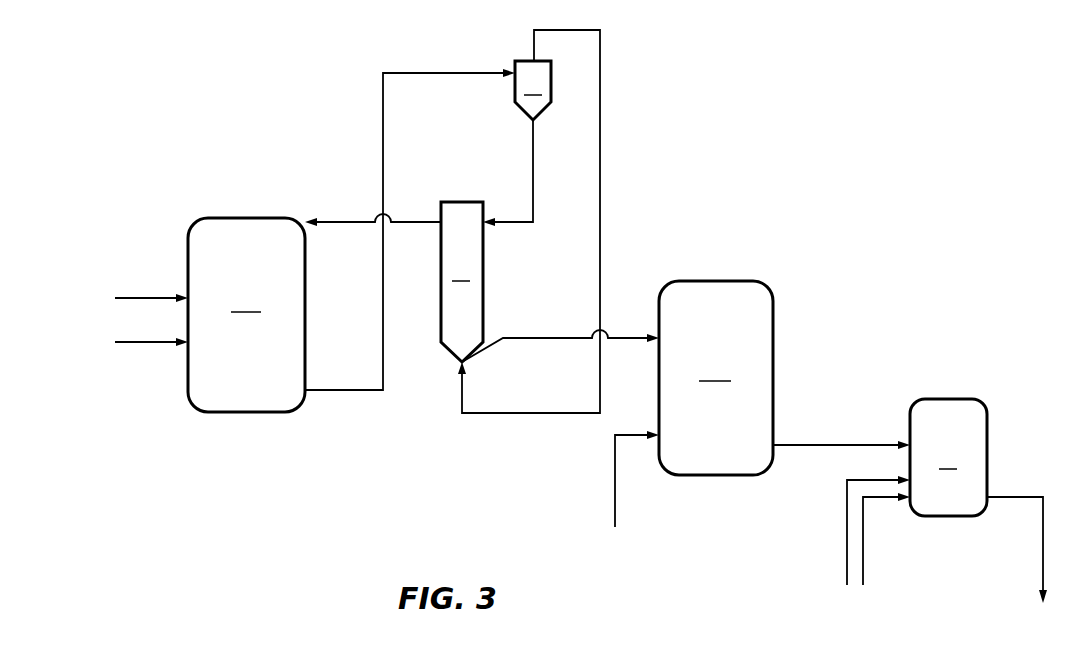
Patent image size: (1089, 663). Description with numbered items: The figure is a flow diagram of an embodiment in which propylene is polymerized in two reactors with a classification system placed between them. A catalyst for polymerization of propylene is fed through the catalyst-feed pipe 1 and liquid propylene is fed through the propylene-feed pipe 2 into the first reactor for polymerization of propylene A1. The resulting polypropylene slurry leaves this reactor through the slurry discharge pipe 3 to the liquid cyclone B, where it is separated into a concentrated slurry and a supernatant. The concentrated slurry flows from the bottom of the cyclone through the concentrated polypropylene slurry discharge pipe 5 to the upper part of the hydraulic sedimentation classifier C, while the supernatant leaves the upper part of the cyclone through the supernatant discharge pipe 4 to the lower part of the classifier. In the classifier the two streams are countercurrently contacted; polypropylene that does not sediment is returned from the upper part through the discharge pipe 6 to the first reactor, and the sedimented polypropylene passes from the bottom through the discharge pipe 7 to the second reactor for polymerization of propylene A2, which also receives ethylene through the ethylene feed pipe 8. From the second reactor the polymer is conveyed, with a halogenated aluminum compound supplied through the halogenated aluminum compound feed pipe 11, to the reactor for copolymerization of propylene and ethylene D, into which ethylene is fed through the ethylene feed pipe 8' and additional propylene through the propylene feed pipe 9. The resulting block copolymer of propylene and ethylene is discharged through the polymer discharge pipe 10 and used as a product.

The catalyst-feed pipe 1 is at (152, 298).
The propylene-feed pipe 2 is at (157, 344).
The slurry discharge pipe 3 is at (383, 118).
The supernatant discharge pipe 4 is at (600, 150).
The concentrated polypropylene slurry discharge pipe 5 is at (533, 192).
The discharge pipe of hydraulic sedimentation classifier 6 is at (340, 221).
The discharge pipe of hydraulic sedimentation classifier 7 is at (535, 338).
The ethylene feed pipe 8 is at (637, 479).
The ethylene feed pipe 8' is at (848, 530).
The propylene feed pipe 9 is at (863, 540).
The polymer discharge pipe 10 is at (1043, 540).
The halogenated aluminum compound feed pipe 11 is at (823, 445).
The first reactor for polymerization of propylene A1 is at (246, 315).
The second reactor for polymerization of propylene A2 is at (716, 378).
The liquid cyclone B is at (533, 90).
The hydraulic sedimentation classifier C is at (462, 282).
The reactor for copolymerization of propylene and ethylene D is at (948, 457).